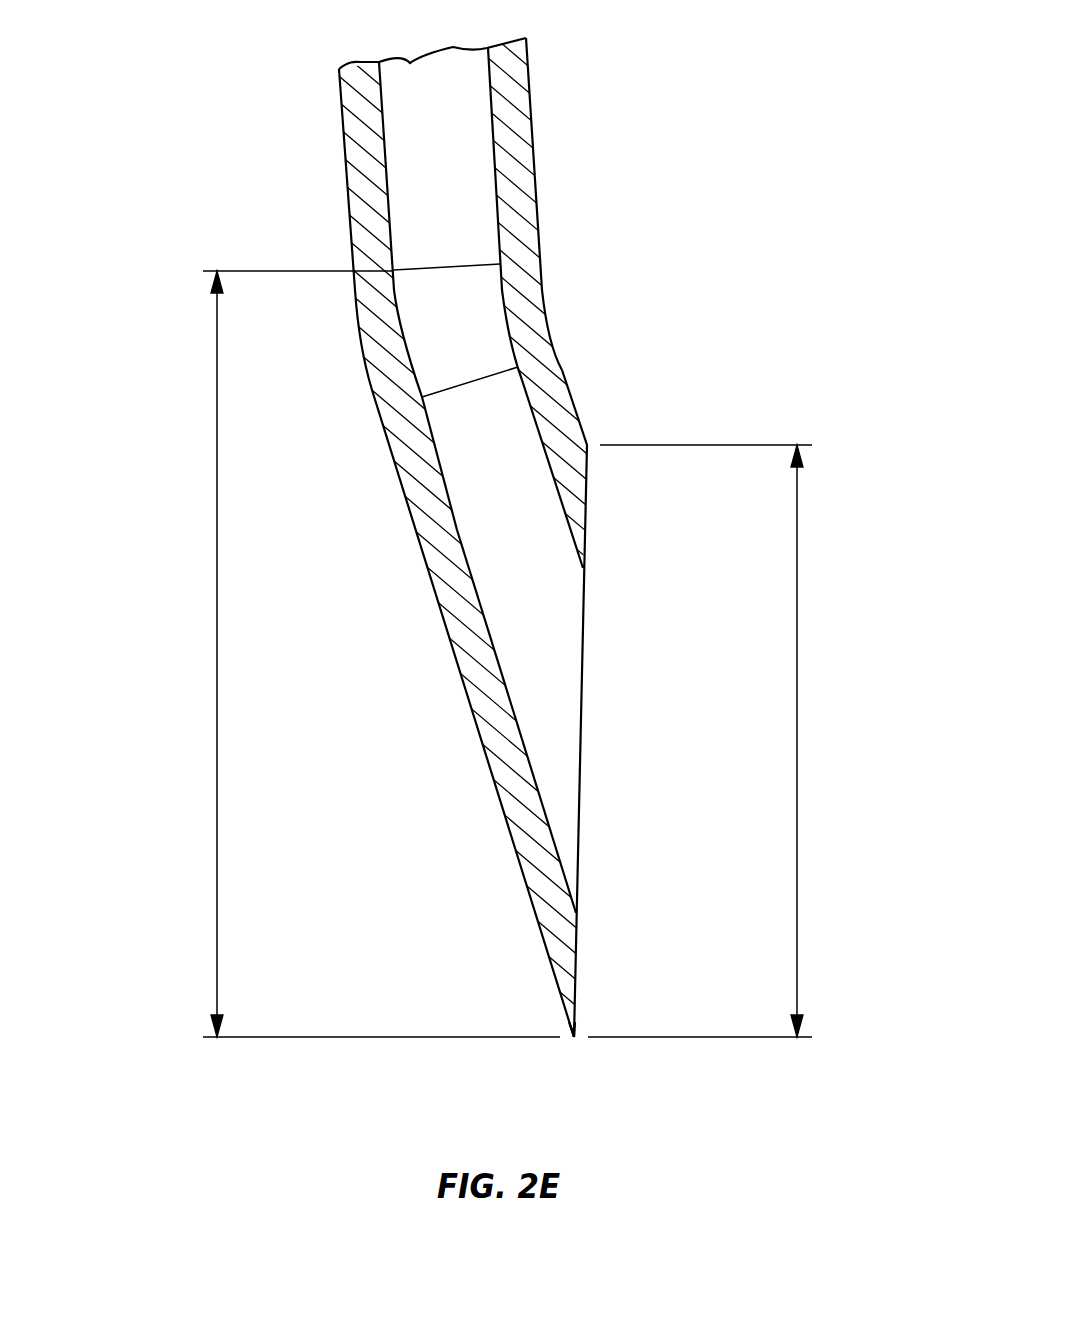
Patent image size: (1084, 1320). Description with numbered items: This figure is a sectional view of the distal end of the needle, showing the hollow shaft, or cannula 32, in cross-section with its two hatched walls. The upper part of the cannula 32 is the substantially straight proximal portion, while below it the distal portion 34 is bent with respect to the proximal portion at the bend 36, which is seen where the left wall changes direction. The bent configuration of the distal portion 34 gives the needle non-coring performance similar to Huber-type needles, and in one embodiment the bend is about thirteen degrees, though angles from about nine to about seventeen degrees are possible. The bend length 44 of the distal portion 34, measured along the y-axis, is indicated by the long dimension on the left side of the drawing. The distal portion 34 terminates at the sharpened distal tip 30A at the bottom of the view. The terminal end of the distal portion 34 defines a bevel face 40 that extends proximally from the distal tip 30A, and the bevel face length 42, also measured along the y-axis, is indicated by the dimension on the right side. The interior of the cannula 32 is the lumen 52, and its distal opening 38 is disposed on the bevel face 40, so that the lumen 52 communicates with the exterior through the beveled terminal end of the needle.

The cannula 32 is at (520, 124).
The distal portion 34 is at (352, 580).
The bend 36 is at (362, 332).
The distal opening 38 is at (576, 913).
The bevel face 40 is at (585, 490).
The bevel face length 42 is at (797, 742).
The bend length 44 is at (217, 653).
The lumen 52 is at (531, 541).
The distal tip 30A is at (574, 1037).